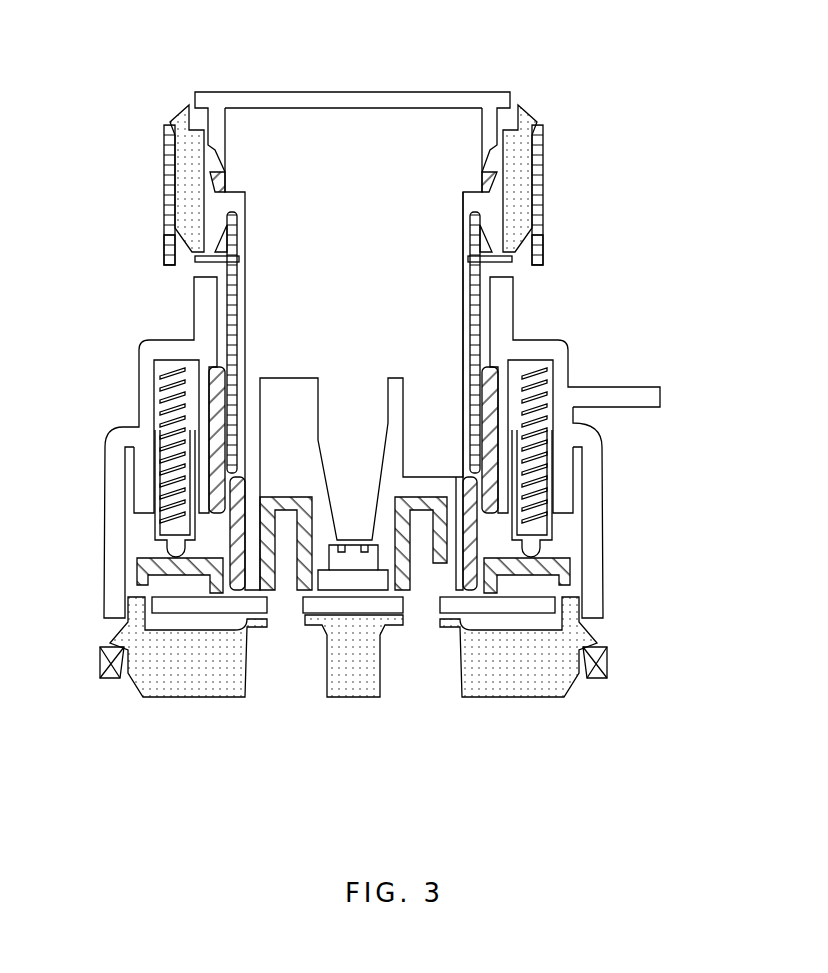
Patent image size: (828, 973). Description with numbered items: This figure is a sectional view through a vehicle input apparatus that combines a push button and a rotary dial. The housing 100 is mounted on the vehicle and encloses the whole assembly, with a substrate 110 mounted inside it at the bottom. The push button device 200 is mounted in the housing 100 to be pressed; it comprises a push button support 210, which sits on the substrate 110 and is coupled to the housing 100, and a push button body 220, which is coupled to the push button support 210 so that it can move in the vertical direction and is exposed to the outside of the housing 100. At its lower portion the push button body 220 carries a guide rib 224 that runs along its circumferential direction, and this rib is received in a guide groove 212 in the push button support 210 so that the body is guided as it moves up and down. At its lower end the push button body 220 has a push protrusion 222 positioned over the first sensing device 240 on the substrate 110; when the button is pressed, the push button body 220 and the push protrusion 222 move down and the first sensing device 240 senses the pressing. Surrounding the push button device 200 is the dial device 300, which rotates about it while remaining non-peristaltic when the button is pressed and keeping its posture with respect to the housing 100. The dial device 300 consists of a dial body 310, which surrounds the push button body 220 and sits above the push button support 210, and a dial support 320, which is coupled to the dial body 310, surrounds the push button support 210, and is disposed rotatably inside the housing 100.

The housing 100 is at (398, 653).
The substrate 110 is at (527, 603).
The push button device 200 is at (222, 82).
The push button support 210 is at (472, 492).
The guide groove 212 is at (467, 590).
The push button body 220 is at (288, 290).
The push protrusion 222 is at (340, 530).
The guide rib 224 is at (467, 590).
The first sensing device 240 is at (314, 583).
The dial device 300 is at (550, 232).
The dial body 310 is at (540, 249).
The dial support 320 is at (490, 397).